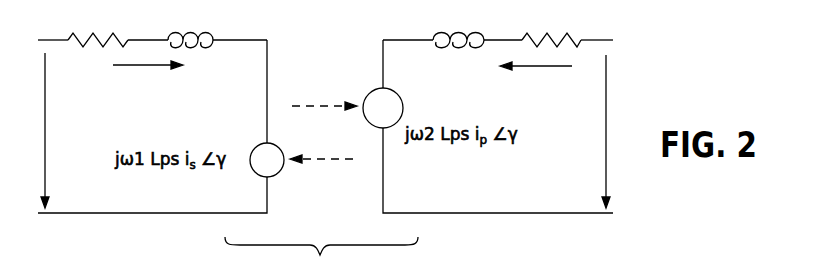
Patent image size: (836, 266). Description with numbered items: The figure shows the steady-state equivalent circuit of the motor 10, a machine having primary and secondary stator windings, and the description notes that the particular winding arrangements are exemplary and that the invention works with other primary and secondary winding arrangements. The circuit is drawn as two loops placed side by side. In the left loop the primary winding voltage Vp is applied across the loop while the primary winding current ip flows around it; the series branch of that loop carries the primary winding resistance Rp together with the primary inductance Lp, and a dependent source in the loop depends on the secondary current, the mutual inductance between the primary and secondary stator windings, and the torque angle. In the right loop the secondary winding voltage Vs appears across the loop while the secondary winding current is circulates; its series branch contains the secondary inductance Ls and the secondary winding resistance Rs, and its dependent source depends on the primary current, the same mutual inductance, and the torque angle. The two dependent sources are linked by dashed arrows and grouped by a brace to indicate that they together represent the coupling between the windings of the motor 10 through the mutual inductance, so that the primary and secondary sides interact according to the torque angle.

The motor 10 is at (322, 178).
The primary winding resistance Rp is at (98, 24).
The primary inductance (Lp + Llp) Lp is at (213, 25).
The primary winding voltage Vp is at (30, 130).
The primary winding current ip is at (148, 76).
The secondary inductance (Ls + Lls) Ls is at (426, 25).
The secondary winding resistance Rs is at (551, 24).
The secondary winding voltage Vs is at (619, 131).
The secondary winding current is is at (521, 63).